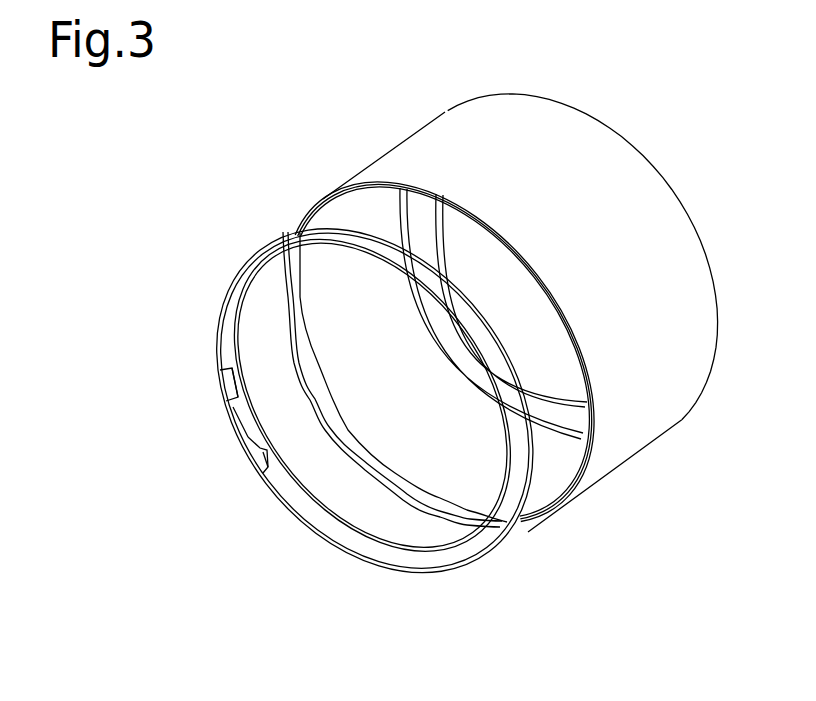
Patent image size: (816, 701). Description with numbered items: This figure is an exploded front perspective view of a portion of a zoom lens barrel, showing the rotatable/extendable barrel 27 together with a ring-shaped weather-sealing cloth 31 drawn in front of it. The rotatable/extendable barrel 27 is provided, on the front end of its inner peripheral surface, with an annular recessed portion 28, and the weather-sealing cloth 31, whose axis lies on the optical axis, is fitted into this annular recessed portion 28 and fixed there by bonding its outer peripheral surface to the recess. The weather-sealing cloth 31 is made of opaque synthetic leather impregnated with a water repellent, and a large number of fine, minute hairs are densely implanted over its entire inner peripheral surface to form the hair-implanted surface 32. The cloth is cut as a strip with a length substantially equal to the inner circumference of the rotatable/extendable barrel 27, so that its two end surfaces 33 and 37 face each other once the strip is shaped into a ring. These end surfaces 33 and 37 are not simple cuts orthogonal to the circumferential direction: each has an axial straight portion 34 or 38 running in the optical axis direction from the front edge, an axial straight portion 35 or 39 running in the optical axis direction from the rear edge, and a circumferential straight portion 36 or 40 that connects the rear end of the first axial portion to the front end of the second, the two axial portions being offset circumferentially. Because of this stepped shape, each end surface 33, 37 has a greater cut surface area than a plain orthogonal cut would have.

The rotatable/extendable barrel 27 is at (643, 190).
The annular recessed portion 28 is at (447, 512).
The weather-sealing cloth 31 is at (335, 533).
The hair-implanted surface 32 is at (387, 558).
The end surface 33 is at (233, 389).
The axial straight portion (first edge) 34 is at (156, 361).
The axial straight portion (second edge) 35 is at (224, 511).
The circumferential straight portion (connecting portion) 36 is at (188, 474).
The end surface 37 is at (237, 408).
The axial straight portion (first edge) 38 is at (222, 357).
The axial straight portion (second edge) 39 is at (265, 473).
The circumferential straight portion (connecting portion) 40 is at (242, 443).